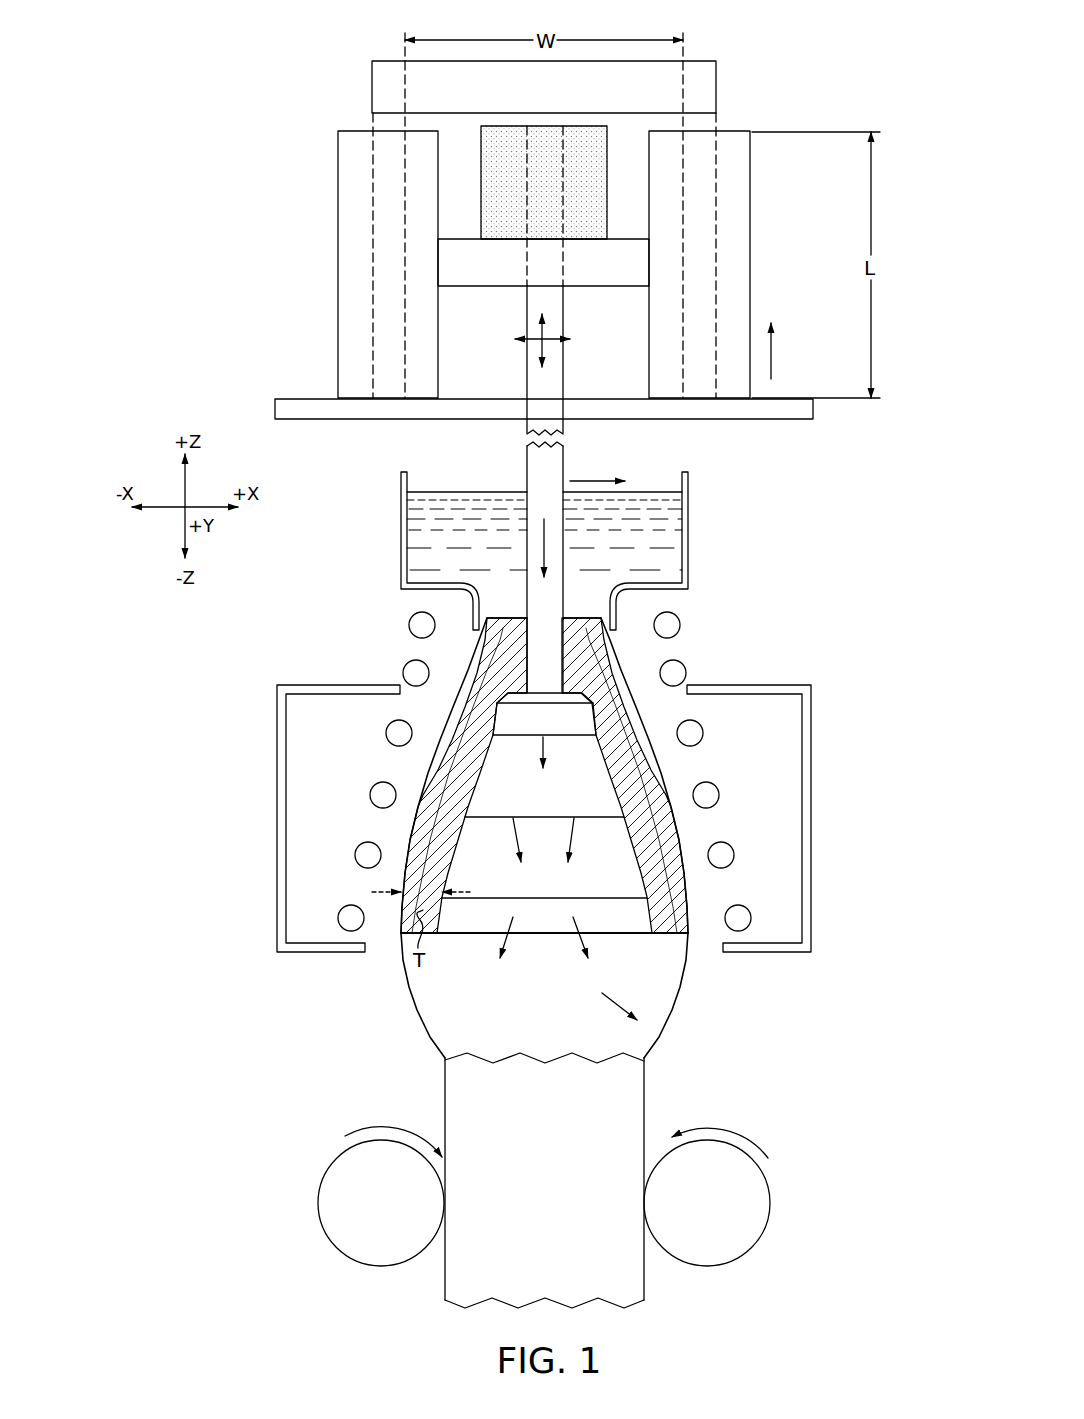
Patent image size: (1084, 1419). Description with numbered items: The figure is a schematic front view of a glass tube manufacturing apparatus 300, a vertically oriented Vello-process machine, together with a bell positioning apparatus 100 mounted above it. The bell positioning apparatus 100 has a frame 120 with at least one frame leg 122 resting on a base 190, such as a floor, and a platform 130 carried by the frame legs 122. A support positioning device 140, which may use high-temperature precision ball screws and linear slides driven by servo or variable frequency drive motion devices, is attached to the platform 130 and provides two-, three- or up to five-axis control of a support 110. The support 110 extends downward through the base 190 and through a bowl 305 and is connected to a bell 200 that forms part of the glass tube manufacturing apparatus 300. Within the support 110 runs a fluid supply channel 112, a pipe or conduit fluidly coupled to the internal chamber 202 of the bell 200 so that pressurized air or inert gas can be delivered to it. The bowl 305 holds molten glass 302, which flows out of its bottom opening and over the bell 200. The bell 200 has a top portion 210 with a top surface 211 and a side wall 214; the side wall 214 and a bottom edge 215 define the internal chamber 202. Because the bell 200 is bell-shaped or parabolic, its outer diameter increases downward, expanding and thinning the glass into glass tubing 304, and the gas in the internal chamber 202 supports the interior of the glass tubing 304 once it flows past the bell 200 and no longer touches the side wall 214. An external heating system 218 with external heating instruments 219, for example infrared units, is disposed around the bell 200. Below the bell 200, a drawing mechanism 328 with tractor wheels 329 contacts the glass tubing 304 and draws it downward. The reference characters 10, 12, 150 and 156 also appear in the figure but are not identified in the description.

The extrusion direction arrow 10 is at (771, 355).
The feed direction arrow 12 is at (590, 481).
The bell positioning apparatus 100 is at (778, 70).
The support 110 is at (563, 386).
The fluid supply channel 112 is at (532, 452).
The frame 120 is at (700, 58).
The frame leg 122 is at (372, 121).
The platform 130 is at (600, 287).
The support positioning device 140 is at (608, 140).
The left support column 150 is at (336, 266).
The right support column 156 is at (753, 280).
The base 190 is at (813, 412).
The bell 200 is at (483, 937).
The internal chamber 202 is at (567, 893).
The top portion 210 is at (607, 643).
The top surface 211 is at (568, 618).
The side wall 214 is at (619, 682).
The bottom edge 215 is at (551, 935).
The external heating system 218 is at (811, 723).
The external heating instruments 219 is at (386, 736).
The glass tube manufacturing apparatus 300 is at (196, 186).
The molten glass 302 is at (493, 505).
The glass tubing 304 is at (644, 1102).
The bowl 305 is at (688, 480).
The drawing mechanism 328 is at (777, 1147).
The tractor wheel 329 is at (318, 1205).